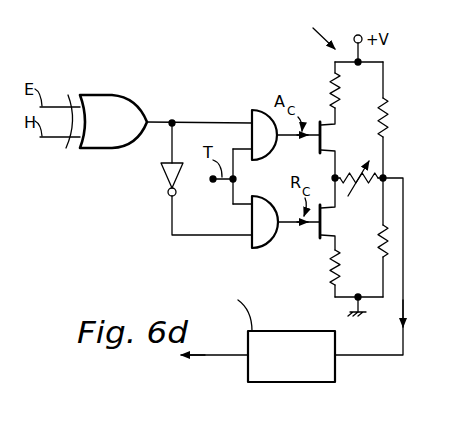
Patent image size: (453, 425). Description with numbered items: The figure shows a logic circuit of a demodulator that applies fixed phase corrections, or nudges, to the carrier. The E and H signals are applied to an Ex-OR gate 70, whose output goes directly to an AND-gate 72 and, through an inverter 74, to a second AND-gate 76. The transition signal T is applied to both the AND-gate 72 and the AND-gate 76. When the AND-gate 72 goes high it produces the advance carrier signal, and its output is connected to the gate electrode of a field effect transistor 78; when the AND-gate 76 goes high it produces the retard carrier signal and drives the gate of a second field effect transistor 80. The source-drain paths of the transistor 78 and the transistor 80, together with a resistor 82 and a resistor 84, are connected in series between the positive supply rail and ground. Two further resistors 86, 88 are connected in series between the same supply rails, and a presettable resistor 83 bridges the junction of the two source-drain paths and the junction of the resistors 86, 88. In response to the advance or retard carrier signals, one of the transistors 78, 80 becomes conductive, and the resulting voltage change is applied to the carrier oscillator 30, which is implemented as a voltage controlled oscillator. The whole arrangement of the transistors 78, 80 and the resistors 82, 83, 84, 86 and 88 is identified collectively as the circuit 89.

The carrier oscillator 30 is at (272, 338).
The Ex-OR gate 70 is at (118, 100).
The AND-gate 72 is at (273, 148).
The inverter 74 is at (163, 176).
The AND-gate 76 is at (273, 236).
The field effect transistor 78 is at (328, 138).
The field effect transistor 80 is at (328, 230).
The resistor 82 is at (329, 83).
The presettable resistor 83 is at (362, 186).
The resistor 84 is at (326, 268).
The resistor 86 is at (388, 129).
The resistor 88 is at (381, 246).
The circuit formed by the FETs and resistors 89 is at (314, 30).